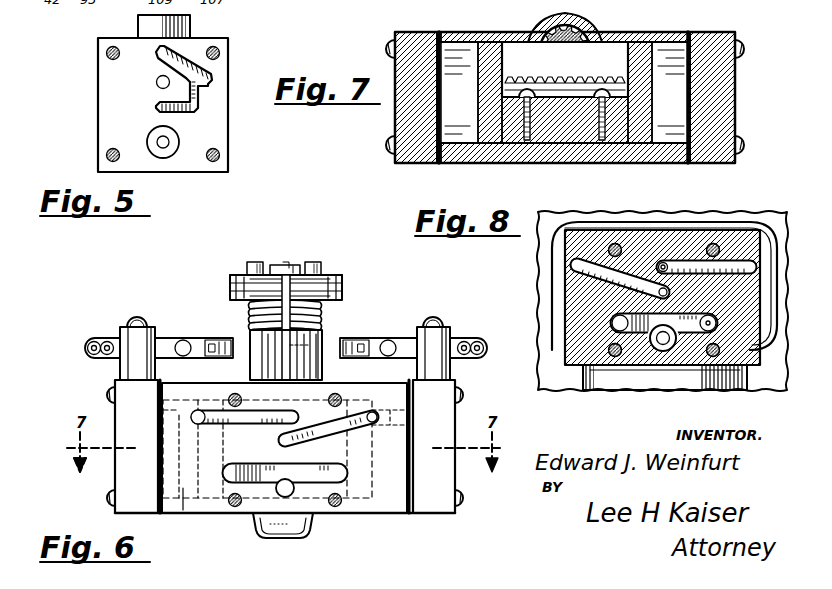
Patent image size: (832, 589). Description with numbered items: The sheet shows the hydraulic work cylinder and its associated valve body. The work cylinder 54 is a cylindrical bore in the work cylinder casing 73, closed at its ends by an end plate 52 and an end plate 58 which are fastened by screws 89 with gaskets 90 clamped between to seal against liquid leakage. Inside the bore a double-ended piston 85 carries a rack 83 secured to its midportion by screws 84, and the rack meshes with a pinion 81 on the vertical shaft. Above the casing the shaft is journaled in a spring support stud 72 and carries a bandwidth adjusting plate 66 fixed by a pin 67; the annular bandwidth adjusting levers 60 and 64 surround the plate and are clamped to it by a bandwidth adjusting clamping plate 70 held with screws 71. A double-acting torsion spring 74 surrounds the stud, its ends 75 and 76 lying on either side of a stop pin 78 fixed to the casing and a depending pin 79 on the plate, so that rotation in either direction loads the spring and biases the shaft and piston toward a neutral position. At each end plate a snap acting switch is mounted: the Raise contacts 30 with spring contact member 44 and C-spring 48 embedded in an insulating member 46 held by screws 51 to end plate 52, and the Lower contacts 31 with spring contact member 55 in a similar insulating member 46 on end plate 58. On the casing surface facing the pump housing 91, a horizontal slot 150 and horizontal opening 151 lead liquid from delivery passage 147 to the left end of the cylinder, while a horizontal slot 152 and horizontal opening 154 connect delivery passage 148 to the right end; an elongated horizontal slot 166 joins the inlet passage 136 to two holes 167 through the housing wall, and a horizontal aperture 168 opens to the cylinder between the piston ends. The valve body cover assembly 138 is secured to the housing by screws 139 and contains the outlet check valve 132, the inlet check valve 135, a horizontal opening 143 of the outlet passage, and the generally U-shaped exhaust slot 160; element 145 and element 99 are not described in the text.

In FIG. 6, the Raise contacts 30 is at (100, 368).
In FIG. 6, the Lower contacts 31 is at (470, 368).
In FIG. 6, the spring contact member 44 is at (85, 348).
In FIG. 6, the insulating member 46 is at (126, 338).
In FIG. 6, the C-spring 48 is at (214, 358).
In FIG. 6, the screws 51 is at (137, 318).
In FIG. 7, the end plate 52 is at (412, 45).
In FIG. 6, the end plate 52 is at (136, 446).
In FIG. 7, the work cylinder 54 is at (459, 92).
In FIG. 6, the work cylinder 54 is at (183, 510).
In FIG. 6, the spring contact member 55 is at (488, 348).
In FIG. 7, the end plate 58 is at (716, 44).
In FIG. 6, the end plate 58 is at (434, 446).
In FIG. 6, the annular bandwidth adjusting lever 60 is at (230, 288).
In FIG. 6, the annular bandwidth adjusting lever 64 is at (232, 280).
In FIG. 6, the bandwidth adjusting plate 66 is at (231, 297).
In FIG. 6, the pin 67 is at (283, 263).
In FIG. 6, the bandwidth adjusting clamping plate 70 is at (236, 276).
In FIG. 6, the screws 71 is at (253, 262).
In FIG. 6, the spring support stud 72 is at (258, 364).
In FIG. 7, the work cylinder casing 73 is at (472, 160).
In FIG. 8, the work cylinder casing 73 is at (752, 318).
In FIG. 6, the work cylinder casing 73 is at (393, 508).
In FIG. 6, the double-acting torsion spring 74 is at (250, 312).
In FIG. 6, the spring end 75 is at (321, 319).
In FIG. 6, the spring end 76 is at (281, 340).
In FIG. 6, the stop pin 78 is at (318, 365).
In FIG. 6, the depending pin 79 is at (312, 350).
In FIG. 7, the pinion 81 is at (552, 32).
In FIG. 7, the rack 83 is at (516, 75).
In FIG. 7, the screws 84 is at (524, 117).
In FIG. 7, the double-ended piston 85 is at (660, 60).
In FIG. 6, the double-ended piston 85 is at (358, 488).
In FIG. 7, the screws 89 is at (388, 46).
In FIG. 6, the screws 89 is at (106, 497).
In FIG. 7, the gaskets 90 is at (440, 45).
In FIG. 6, the gaskets 90 is at (159, 508).
In FIG. 8, the pump housing 91 is at (765, 386).
In FIG. 8, the cover 99 is at (588, 384).
In FIG. 5, the outlet check valve 132 is at (163, 150).
In FIG. 8, the inlet check valve 135 is at (658, 350).
In FIG. 8, the inlet passage 136 is at (670, 345).
In FIG. 5, the valve body cover assembly 138 is at (98, 88).
In FIG. 5, the screws 139 is at (220, 50).
In FIG. 8, the screws 139 is at (613, 357).
In FIG. 6, the screws 139 is at (333, 507).
In FIG. 5, the horizontal opening 143 is at (157, 82).
In FIG. 5, the mounting boss 145 is at (138, 28).
In FIG. 8, the delivery passage 147 is at (664, 262).
In FIG. 8, the delivery passage 148 is at (656, 287).
In FIG. 8, the horizontal slot 150 is at (727, 268).
In FIG. 6, the horizontal slot 150 is at (240, 420).
In FIG. 6, the horizontal opening 151 is at (193, 449).
In FIG. 8, the horizontal slot 152 is at (600, 265).
In FIG. 6, the horizontal slot 152 is at (327, 430).
In FIG. 6, the horizontal opening 154 is at (388, 432).
In FIG. 5, the exhaust slot 160 is at (200, 115).
In FIG. 8, the horizontal slot 166 is at (690, 326).
In FIG. 6, the horizontal slot 166 is at (270, 468).
In FIG. 8, the holes 167 is at (612, 323).
In FIG. 6, the horizontal aperture 168 is at (278, 494).